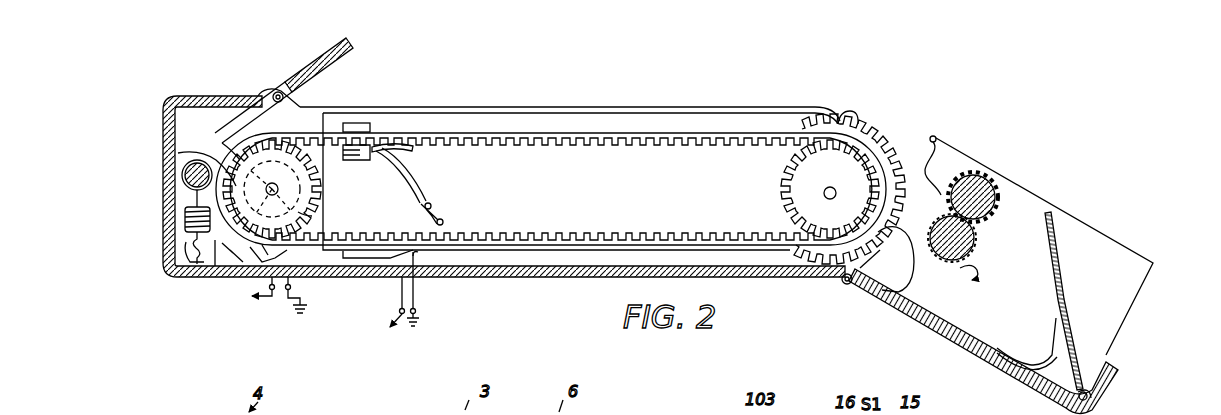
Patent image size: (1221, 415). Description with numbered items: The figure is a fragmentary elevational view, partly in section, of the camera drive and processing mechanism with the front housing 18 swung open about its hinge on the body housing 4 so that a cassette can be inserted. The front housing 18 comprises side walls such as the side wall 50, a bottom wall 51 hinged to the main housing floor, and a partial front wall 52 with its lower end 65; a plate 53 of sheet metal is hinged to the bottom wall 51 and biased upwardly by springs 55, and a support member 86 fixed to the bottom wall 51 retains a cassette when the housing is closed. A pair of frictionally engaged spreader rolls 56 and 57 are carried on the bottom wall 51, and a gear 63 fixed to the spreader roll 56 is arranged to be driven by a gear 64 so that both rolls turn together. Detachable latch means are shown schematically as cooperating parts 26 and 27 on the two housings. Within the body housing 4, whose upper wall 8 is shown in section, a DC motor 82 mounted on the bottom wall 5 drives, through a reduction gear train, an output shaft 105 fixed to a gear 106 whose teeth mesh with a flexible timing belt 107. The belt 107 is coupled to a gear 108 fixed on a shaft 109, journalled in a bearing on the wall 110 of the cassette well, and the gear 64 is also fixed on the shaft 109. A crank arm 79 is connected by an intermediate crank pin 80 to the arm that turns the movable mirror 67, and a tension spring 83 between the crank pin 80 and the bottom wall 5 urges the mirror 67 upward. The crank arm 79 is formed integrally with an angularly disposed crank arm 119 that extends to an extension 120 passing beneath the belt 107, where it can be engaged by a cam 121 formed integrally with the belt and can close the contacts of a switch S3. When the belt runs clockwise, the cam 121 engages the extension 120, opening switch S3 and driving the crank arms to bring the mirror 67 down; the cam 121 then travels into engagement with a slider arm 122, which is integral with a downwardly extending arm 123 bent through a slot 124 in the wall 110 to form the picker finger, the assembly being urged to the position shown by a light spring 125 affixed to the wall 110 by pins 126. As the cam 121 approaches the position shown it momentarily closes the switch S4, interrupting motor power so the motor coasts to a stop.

The housing 8 is at (210, 97).
The movable mirror 67 is at (347, 60).
The slider arm 122 is at (366, 123).
The wall 110 is at (545, 125).
The latch part 26 is at (848, 112).
The gear 64 is at (880, 150).
The latch part 27 is at (937, 136).
The spreader roll 56 is at (997, 190).
The crank arm 79 is at (176, 153).
The output shaft 105 is at (290, 170).
The slot 124 is at (400, 158).
The downwardly extending arm 123 is at (342, 157).
The light spring 125 is at (420, 190).
The pins 126 is at (405, 222).
The crank pin 80 is at (184, 181).
The crank arm 119 is at (312, 214).
The gear 106 is at (325, 208).
The tension spring 83 is at (185, 221).
The timing belt 107 is at (547, 233).
The gear 108 is at (792, 195).
The shaft 109 is at (849, 182).
The gear 63 is at (1000, 216).
The spreader roll 57 is at (980, 262).
The support member 86 is at (902, 284).
The plate 53 is at (1062, 290).
The side wall 50 is at (1134, 299).
The DC motor 82 is at (229, 252).
The extension 120 is at (253, 262).
The cam 121 is at (373, 258).
The bottom wall 5 is at (554, 276).
The body housing 4 is at (328, 286).
The bottom wall 51 is at (940, 331).
The springs 55 is at (1030, 364).
The front housing 18 is at (966, 353).
The partial front wall 52 is at (1114, 390).
The tray tip 65 is at (1062, 396).
The switch S3 is at (312, 302).
The switch S4 is at (398, 338).